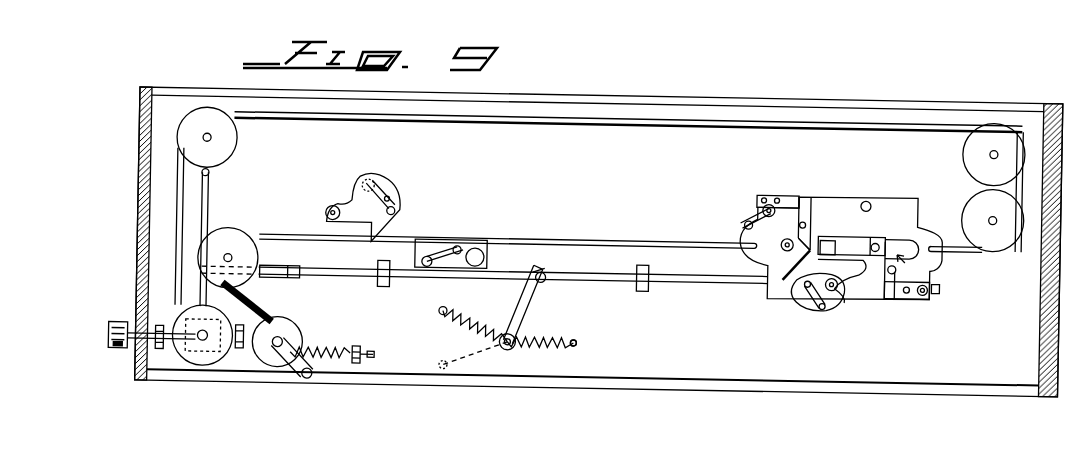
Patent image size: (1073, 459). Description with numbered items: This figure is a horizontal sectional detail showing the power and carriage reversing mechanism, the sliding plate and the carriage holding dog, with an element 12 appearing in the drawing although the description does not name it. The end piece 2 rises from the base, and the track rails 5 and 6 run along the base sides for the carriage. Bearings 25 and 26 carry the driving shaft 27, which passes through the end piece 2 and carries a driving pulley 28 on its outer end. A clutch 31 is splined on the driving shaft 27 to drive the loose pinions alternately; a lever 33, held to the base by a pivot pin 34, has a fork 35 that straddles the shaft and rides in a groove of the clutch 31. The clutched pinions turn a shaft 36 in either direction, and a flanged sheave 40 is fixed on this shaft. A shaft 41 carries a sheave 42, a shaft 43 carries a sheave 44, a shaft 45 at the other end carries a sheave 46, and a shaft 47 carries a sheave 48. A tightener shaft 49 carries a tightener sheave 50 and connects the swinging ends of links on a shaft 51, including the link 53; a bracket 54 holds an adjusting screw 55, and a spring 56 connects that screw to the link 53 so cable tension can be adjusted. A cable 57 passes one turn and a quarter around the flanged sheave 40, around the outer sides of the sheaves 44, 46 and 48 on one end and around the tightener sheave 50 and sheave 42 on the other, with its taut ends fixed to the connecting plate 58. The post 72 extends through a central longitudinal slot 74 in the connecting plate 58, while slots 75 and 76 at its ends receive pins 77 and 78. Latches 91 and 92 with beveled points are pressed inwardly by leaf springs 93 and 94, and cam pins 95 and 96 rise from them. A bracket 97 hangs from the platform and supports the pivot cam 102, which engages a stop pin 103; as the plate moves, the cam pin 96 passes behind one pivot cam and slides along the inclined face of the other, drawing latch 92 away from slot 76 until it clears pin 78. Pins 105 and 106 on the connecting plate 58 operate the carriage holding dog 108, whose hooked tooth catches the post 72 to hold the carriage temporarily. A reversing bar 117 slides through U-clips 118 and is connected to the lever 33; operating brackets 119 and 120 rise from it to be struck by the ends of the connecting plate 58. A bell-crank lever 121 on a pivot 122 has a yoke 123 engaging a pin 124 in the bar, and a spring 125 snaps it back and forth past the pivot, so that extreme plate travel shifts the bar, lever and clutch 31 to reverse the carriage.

The end piece 2 is at (142, 206).
The track rail 5 is at (575, 109).
The track rail 6 is at (598, 367).
The pivot 12 is at (320, 209).
The bearing 25 is at (163, 350).
The bearing 26 is at (245, 348).
The driving shaft 27 is at (164, 226).
The driving pulley 28 is at (121, 352).
The clutch 31 is at (207, 340).
The lever 33 is at (212, 201).
The pivot pin 34 is at (212, 171).
The fork 35 is at (190, 329).
The shaft 36 is at (220, 342).
The flanged sheave 40 is at (188, 354).
The shaft 41 is at (235, 256).
The sheave 42 is at (227, 257).
The shaft 43 is at (212, 136).
The sheave 44 is at (207, 149).
The shaft 45 is at (991, 139).
The sheave 46 is at (993, 154).
The shaft 47 is at (991, 205).
The sheave 48 is at (992, 220).
The tightener shaft 49 is at (287, 336).
The tightener sheave 50 is at (279, 364).
The shaft 51 is at (311, 377).
The link 53 is at (302, 372).
The bracket 54 is at (375, 343).
The adjusting screw 55 is at (363, 360).
The spring 56 is at (333, 356).
The cable 57 is at (575, 117).
The connecting plate 58 is at (900, 235).
The post 72 is at (824, 227).
The slot 74 is at (851, 262).
The slot 75 is at (797, 242).
The slot 76 is at (905, 266).
The pin 77 is at (789, 229).
The pin 78 is at (879, 230).
The latch 91 is at (812, 207).
The latch 92 is at (889, 285).
The leaf spring 93 is at (797, 187).
The leaf spring 94 is at (911, 286).
The cam pin 95 is at (811, 204).
The cam pin 96 is at (937, 265).
The bracket 97 is at (488, 251).
The pivot cam 102 is at (437, 263).
The stop pin 103 is at (462, 243).
The pin 105 is at (870, 190).
The pin 106 is at (837, 276).
The carriage holding dog 108 is at (373, 166).
The reversing bar 117 is at (602, 273).
The U-clip 118 is at (387, 283).
The operating bracket 119 is at (284, 284).
The operating bracket 120 is at (949, 276).
The bell-crank lever 121 is at (476, 322).
The pivot 122 is at (518, 341).
The yoke 123 is at (540, 263).
The pin 124 is at (548, 276).
The spring 125 is at (578, 331).